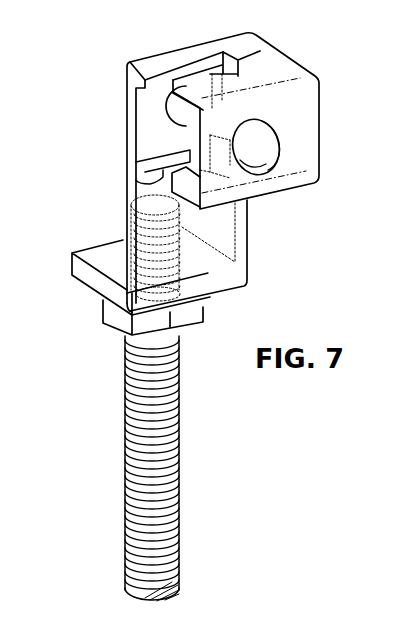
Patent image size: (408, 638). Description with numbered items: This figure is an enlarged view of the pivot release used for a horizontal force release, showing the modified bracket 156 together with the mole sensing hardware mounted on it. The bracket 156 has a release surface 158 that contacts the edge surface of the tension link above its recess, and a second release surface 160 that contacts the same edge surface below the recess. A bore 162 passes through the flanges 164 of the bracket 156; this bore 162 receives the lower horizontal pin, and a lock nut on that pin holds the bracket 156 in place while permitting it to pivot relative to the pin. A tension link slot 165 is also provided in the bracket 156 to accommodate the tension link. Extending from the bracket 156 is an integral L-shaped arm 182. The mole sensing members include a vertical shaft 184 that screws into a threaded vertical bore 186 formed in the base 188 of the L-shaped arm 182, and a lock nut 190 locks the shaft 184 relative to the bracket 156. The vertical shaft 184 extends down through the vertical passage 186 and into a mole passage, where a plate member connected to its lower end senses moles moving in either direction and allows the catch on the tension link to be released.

The modified bracket 156 is at (318, 97).
The release surface 158 is at (237, 63).
The second release surface 160 is at (237, 155).
The bore 162 is at (267, 163).
The flanges 164 is at (145, 108).
The tension link slot 165 is at (136, 178).
The L-shaped arm 182 is at (250, 253).
The vertical shaft 184 is at (180, 468).
The threaded vertical bore 186 is at (208, 294).
The base 188 is at (90, 280).
The lock nut 190 is at (115, 316).